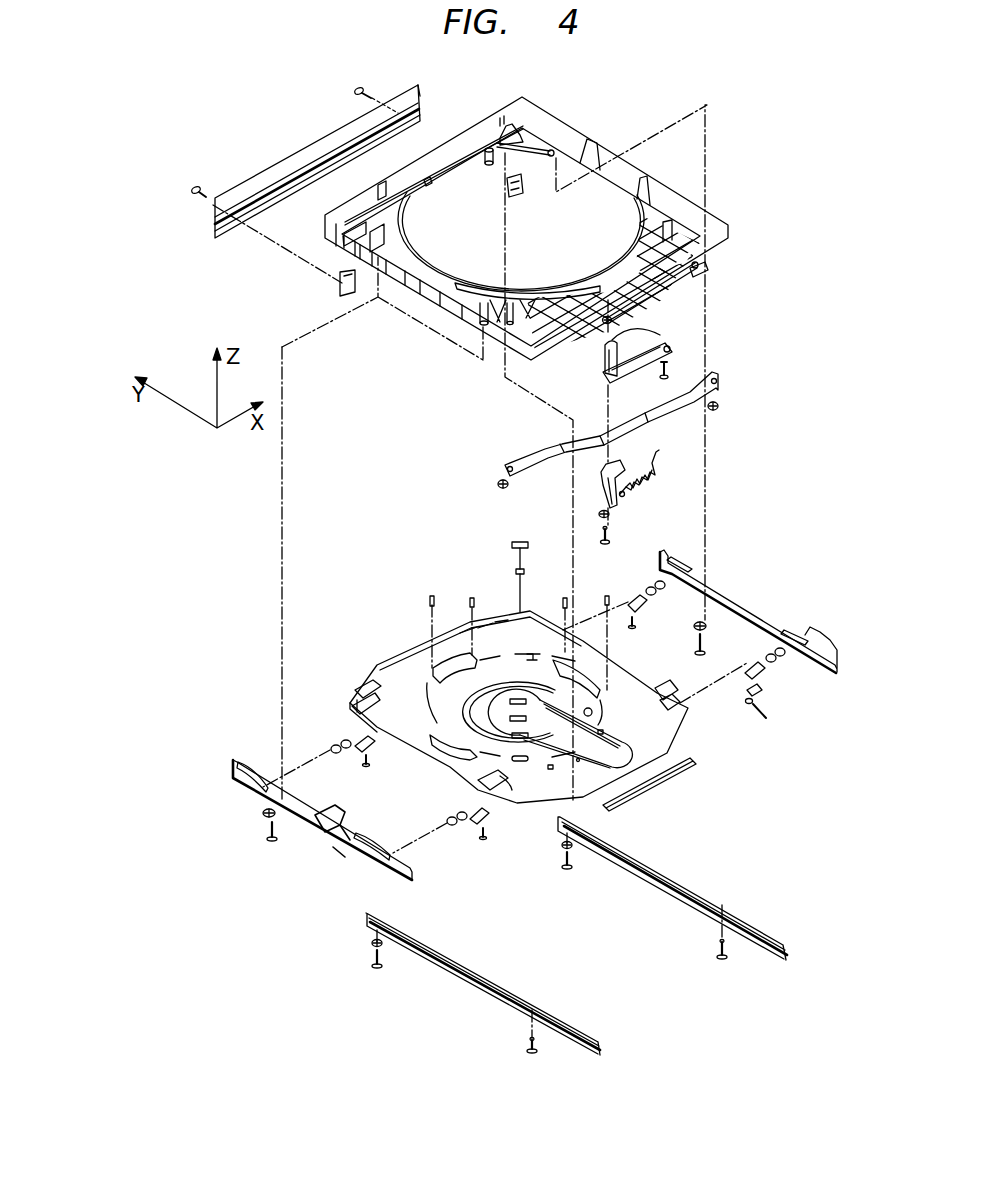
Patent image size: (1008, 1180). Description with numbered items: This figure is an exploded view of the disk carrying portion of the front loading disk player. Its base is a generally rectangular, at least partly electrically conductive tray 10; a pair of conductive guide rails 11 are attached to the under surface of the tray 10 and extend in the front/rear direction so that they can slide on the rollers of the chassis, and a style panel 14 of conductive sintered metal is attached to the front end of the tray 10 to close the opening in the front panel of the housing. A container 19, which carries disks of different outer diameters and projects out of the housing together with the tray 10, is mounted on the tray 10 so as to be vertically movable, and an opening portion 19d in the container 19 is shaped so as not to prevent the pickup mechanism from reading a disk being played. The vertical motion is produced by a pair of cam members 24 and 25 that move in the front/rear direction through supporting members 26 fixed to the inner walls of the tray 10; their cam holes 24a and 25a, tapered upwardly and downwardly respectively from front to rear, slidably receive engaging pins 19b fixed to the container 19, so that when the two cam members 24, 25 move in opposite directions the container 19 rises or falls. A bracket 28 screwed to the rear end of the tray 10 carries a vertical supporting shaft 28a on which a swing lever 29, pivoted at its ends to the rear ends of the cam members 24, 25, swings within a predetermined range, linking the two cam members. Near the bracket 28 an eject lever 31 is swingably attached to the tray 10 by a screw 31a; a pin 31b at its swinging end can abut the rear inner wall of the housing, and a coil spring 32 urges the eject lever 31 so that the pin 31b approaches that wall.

The tray 10 is at (672, 194).
The guide rails 11 is at (650, 883).
The style panel 14 is at (298, 156).
The container 19 is at (687, 727).
The engaging pins 19b is at (346, 757).
The opening portion 19d is at (563, 745).
The cam member 24 is at (770, 621).
The cam hole 24a is at (690, 566).
The cam member 25 is at (305, 820).
The cam hole 25a is at (252, 762).
The supporting members 26 is at (705, 631).
The bracket 28 is at (630, 340).
The supporting shaft 28a is at (606, 352).
The swing lever 29 is at (677, 402).
The eject lever 31 is at (599, 486).
The screw 31a is at (607, 545).
The pin 31b is at (617, 507).
The coil spring 32 is at (638, 483).